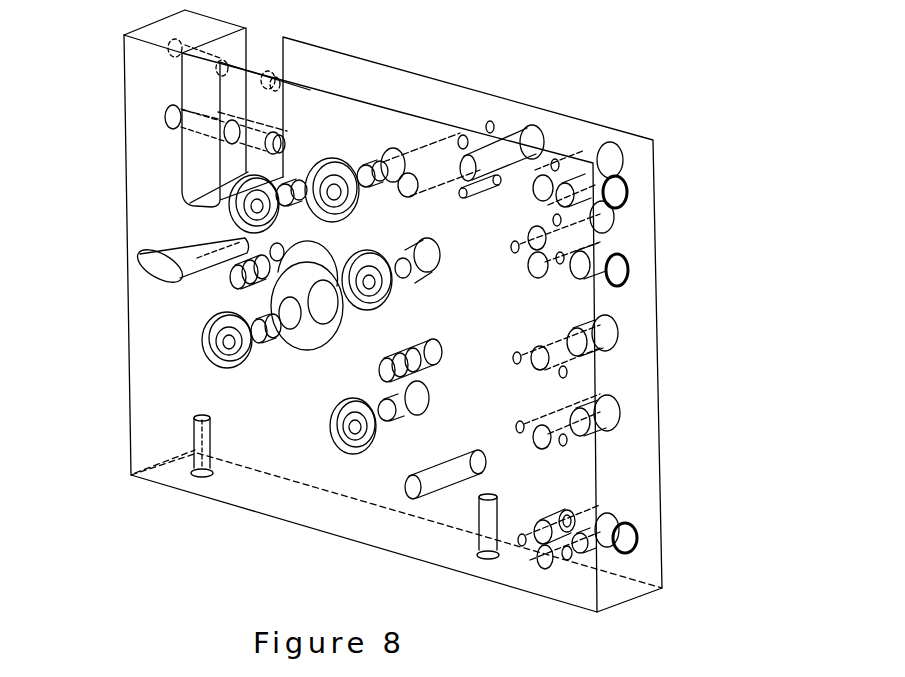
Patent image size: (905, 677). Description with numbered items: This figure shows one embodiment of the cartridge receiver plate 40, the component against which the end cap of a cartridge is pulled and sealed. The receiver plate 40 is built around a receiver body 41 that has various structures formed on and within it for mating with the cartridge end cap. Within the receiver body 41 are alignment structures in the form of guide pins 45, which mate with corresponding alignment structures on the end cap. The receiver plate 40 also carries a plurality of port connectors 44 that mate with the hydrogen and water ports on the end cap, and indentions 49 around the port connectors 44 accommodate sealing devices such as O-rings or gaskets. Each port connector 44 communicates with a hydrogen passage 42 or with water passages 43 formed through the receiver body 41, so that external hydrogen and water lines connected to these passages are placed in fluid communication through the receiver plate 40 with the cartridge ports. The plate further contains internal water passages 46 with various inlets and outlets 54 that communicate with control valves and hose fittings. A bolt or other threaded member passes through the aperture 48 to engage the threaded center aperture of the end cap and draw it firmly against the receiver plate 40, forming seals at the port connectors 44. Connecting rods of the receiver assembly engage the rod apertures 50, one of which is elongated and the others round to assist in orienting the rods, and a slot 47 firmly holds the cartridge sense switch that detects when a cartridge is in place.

The receiver plate 40 is at (613, 98).
The receiver body 41 is at (393, 323).
The hydrogen passage 42 is at (407, 153).
The water passages 43 is at (318, 157).
The port connectors 44 is at (347, 427).
The guide pins 45 is at (372, 372).
The internal water passages 46 is at (578, 557).
The slot 47 is at (197, 148).
The aperture 48 is at (332, 303).
The indentions 49 is at (353, 447).
The rod apertures 50 is at (148, 263).
The inlets and outlets 54 is at (627, 338).